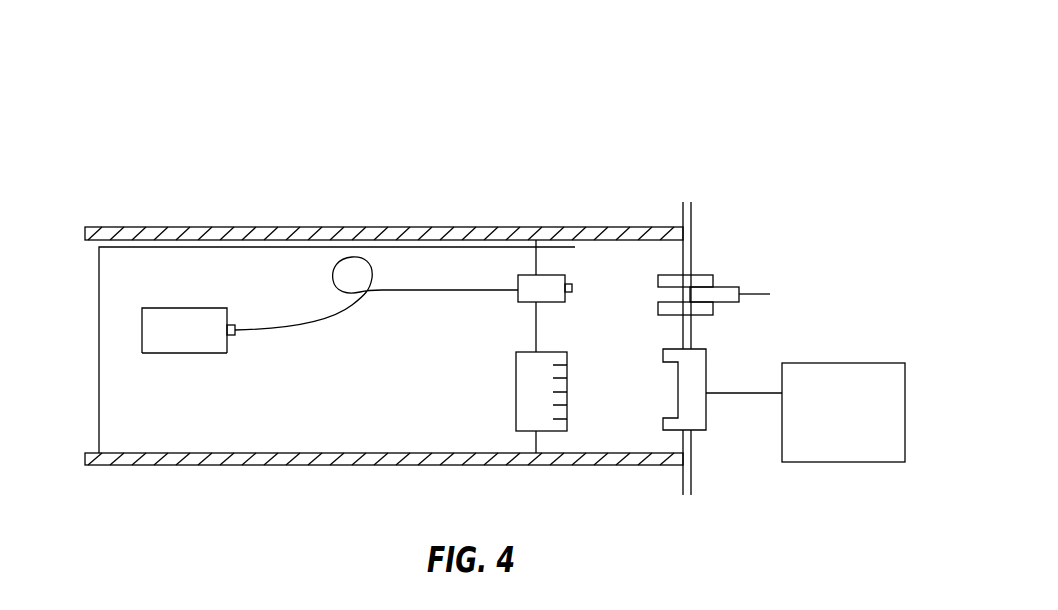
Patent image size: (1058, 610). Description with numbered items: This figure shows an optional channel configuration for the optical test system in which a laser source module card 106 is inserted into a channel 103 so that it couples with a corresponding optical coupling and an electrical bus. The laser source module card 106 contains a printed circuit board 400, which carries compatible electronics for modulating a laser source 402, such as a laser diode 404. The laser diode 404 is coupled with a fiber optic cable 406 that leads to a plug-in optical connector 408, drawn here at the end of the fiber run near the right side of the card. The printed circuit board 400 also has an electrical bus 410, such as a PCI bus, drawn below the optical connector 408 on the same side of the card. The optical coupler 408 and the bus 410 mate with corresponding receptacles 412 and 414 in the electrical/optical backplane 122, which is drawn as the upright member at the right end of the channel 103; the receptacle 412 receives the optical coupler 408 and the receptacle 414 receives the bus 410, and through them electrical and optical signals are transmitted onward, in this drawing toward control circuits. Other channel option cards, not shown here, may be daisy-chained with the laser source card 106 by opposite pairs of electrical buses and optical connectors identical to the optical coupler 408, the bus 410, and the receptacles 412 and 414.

The printed circuit board 400 is at (246, 407).
The laser source module card 106 is at (336, 392).
The laser source 402 is at (188, 300).
The laser diode 404 is at (163, 354).
The fiber optic cable 406 is at (404, 289).
The plug-in optical connector 408 is at (549, 281).
The electrical bus 410 is at (554, 353).
The channel 103 is at (695, 182).
The electrical/optical backplane 122 is at (691, 247).
The receptacle 412 is at (713, 275).
The receptacle 414 is at (708, 364).